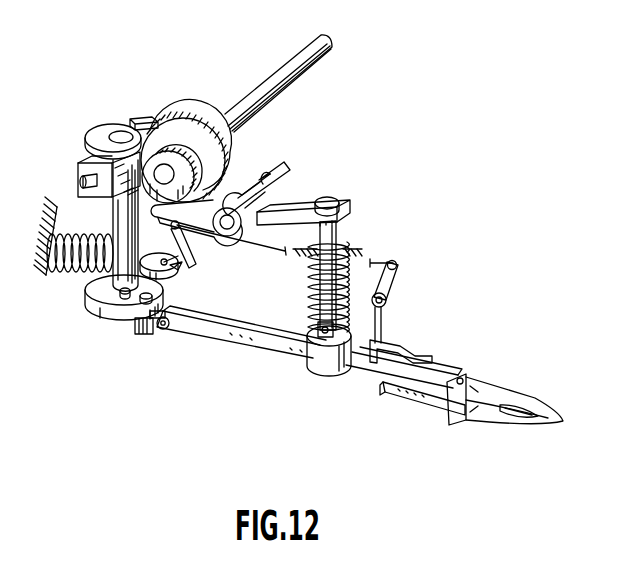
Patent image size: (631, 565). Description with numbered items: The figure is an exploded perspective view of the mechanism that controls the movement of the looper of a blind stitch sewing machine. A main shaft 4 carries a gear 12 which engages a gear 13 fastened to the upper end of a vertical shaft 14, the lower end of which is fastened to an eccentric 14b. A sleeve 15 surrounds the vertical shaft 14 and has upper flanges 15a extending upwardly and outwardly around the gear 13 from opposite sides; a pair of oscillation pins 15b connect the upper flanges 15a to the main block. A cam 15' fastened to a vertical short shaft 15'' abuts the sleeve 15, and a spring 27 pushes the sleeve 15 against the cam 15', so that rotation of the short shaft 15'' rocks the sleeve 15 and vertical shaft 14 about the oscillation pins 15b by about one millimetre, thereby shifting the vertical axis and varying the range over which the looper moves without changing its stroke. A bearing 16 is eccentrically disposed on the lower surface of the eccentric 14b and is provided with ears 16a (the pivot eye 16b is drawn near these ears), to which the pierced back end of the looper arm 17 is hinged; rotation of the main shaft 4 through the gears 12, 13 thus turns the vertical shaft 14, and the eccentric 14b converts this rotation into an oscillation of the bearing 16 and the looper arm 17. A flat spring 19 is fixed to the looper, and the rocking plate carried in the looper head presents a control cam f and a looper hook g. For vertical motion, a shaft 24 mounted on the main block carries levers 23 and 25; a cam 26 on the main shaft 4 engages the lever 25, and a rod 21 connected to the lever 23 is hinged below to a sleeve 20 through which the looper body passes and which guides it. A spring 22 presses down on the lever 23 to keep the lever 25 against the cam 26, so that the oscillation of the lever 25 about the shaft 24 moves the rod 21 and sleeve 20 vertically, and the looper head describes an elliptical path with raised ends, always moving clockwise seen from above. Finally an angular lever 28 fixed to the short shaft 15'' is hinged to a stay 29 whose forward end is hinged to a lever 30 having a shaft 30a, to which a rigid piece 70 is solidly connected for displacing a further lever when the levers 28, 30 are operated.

The main shaft 4 is at (288, 62).
The gear 12 is at (228, 152).
The gear 13 is at (93, 135).
The vertical shaft 14 is at (122, 135).
The eccentric 14b is at (95, 318).
The sleeve 15 is at (106, 229).
The upper flanges 15a is at (142, 117).
The oscillation pins 15b is at (84, 174).
The cam 15' is at (159, 253).
The vertical short shaft 15'' is at (190, 280).
The bearing 16 is at (137, 330).
The ears 16a is at (157, 328).
The pivot eye 16b is at (163, 330).
The looper arm 17 is at (232, 340).
The flat spring 19 is at (395, 402).
The sleeve 20 is at (316, 369).
The rod 21 is at (335, 197).
The spring 22 is at (308, 298).
The lever 23 is at (298, 205).
The shaft 24 is at (289, 155).
The lever 25 is at (226, 200).
The cam 26 is at (186, 138).
The spring 27 is at (84, 267).
The angular lever 28 is at (195, 256).
The stay 29 is at (243, 250).
The lever 30 is at (394, 291).
The shaft 30a is at (382, 328).
The rigid piece 70 is at (423, 353).
The control cam f is at (480, 412).
The looper hook g is at (513, 428).